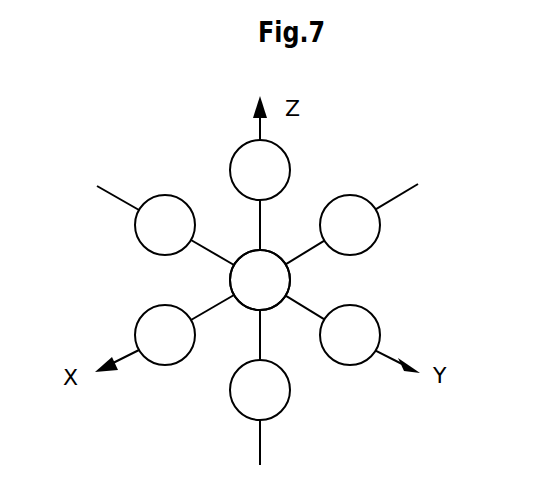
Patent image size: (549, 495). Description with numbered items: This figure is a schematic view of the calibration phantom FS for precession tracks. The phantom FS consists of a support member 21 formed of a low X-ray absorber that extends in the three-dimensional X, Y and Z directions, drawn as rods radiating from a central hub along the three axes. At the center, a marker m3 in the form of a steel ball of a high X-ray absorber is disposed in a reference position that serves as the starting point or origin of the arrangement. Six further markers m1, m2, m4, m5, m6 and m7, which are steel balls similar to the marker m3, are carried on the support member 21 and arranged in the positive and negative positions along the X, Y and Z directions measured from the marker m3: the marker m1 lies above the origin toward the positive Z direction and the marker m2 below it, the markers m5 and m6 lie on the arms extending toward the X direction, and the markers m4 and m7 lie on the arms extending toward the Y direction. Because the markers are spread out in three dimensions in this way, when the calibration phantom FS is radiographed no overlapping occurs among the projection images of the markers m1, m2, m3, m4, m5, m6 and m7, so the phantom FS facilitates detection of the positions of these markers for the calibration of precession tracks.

The marker m1 is at (239, 149).
The marker m2 is at (230, 396).
The marker m3 is at (276, 306).
The marker m4 is at (380, 225).
The marker m5 is at (136, 234).
The marker m6 is at (152, 362).
The marker m7 is at (377, 315).
The support member 21 is at (262, 218).
The calibration phantom for precession tracks FS is at (351, 157).